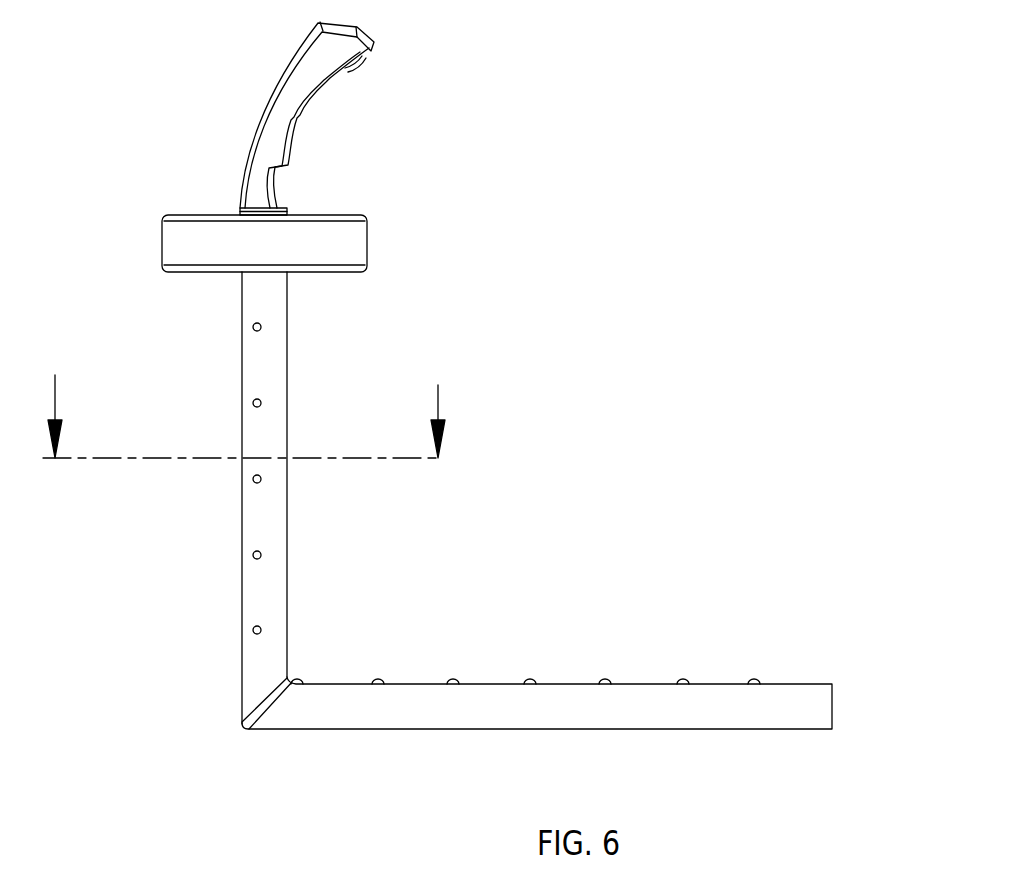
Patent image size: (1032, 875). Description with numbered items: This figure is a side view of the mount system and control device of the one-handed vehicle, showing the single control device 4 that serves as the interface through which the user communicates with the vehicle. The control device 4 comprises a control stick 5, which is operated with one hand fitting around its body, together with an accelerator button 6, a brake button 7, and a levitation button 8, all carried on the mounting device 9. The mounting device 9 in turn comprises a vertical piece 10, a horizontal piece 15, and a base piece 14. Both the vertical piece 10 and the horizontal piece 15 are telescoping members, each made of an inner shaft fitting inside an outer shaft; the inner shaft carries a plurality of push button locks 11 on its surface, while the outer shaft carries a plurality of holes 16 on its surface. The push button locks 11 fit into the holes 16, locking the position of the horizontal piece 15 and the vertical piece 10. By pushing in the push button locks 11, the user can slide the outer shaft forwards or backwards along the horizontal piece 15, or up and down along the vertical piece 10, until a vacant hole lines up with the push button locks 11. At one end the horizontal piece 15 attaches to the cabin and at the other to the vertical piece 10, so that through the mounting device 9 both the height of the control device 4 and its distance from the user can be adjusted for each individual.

The control device 4 is at (465, 157).
The control stick 5 is at (290, 125).
The accelerator button 6 is at (345, 68).
The brake button 7 is at (253, 416).
The levitation button 8 is at (265, 206).
The mounting device 9 is at (455, 500).
The vertical piece 10 is at (286, 530).
The push button locks 11 is at (253, 326).
The base piece 14 is at (337, 254).
The horizontal piece 15 is at (832, 702).
The holes 16 is at (253, 402).